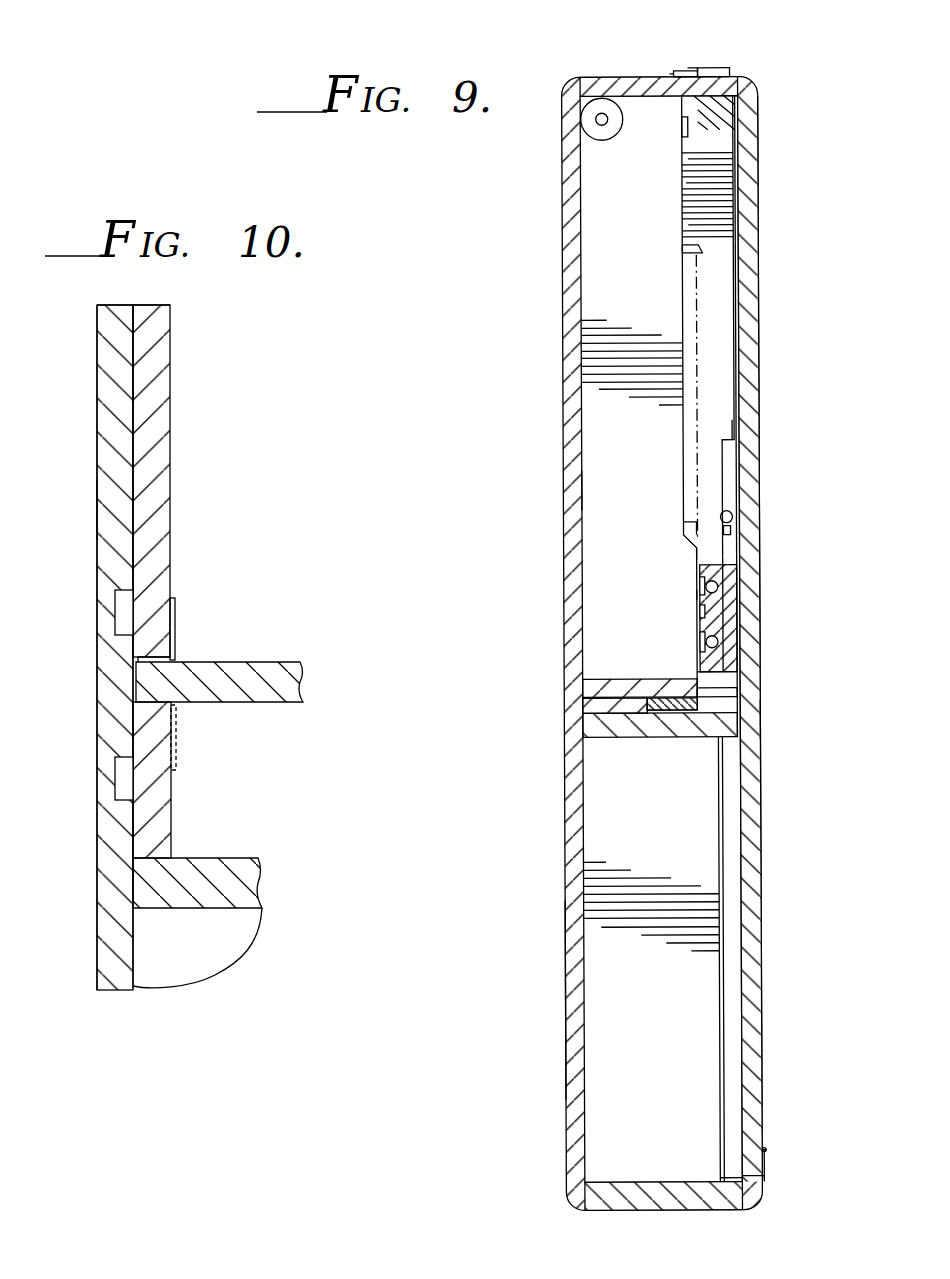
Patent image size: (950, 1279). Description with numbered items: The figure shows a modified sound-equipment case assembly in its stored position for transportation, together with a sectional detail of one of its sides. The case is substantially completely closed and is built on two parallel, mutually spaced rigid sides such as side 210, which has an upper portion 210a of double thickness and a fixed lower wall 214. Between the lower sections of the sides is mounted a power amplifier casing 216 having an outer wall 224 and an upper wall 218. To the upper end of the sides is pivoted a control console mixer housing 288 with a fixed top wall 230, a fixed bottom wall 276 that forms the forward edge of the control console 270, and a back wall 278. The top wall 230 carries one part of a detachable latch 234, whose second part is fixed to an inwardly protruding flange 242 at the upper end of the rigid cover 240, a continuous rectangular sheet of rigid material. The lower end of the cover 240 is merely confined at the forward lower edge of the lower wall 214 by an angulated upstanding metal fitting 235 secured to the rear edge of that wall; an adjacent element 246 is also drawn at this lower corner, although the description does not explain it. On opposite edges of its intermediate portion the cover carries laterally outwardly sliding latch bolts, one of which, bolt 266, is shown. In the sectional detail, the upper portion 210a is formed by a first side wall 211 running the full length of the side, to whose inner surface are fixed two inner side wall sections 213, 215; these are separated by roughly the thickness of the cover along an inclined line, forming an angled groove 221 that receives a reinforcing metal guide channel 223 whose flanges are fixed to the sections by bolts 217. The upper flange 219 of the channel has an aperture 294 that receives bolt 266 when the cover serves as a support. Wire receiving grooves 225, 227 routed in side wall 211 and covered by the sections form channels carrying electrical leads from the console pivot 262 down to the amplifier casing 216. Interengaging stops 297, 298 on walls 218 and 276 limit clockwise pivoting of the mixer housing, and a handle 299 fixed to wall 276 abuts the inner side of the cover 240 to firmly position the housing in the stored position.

In FIG. 10, the side 210 is at (186, 374).
In FIG. 9, the upper portion 210a is at (748, 285).
In FIG. 10, the first side wall 211 is at (107, 510).
In FIG. 9, the side section 213 is at (726, 426).
In FIG. 10, the side section 213 is at (170, 508).
In FIG. 9, the lower wall 214 is at (648, 1208).
In FIG. 9, the side section 215 is at (730, 672).
In FIG. 10, the side section 215 is at (166, 802).
In FIG. 9, the power amplifier casing 216 is at (602, 1060).
In FIG. 9, the bolt 217 is at (718, 585).
In FIG. 9, the upper wall 218 is at (628, 736).
In FIG. 10, the upper wall 218 is at (243, 857).
In FIG. 9, the upper flange 219 is at (694, 565).
In FIG. 10, the upper flange 219 is at (178, 604).
In FIG. 10, the angled groove 221 is at (180, 614).
In FIG. 9, the reinforcing metal guide channel 223 is at (738, 600).
In FIG. 10, the reinforcing metal guide channel 223 is at (186, 643).
In FIG. 9, the outer wall 224 is at (575, 985).
In FIG. 10, the wire receiving groove 225 is at (125, 775).
In FIG. 10, the wire receiving groove 227 is at (125, 613).
In FIG. 9, the top wall 230 is at (620, 47).
In FIG. 9, the detachable latch 234 is at (732, 46).
In FIG. 9, the angulated upstanding metal fitting 235 is at (774, 1150).
In FIG. 9, the rigid cover 240 is at (772, 718).
In FIG. 10, the rigid cover 240 is at (274, 658).
In FIG. 9, the inwardly protruding flange 242 is at (697, 98).
In FIG. 9, the connector 246 is at (788, 1177).
In FIG. 9, the console pivot 262 is at (603, 120).
In FIG. 9, the latch bolt 266 is at (735, 517).
In FIG. 9, the control console 270 is at (712, 247).
In FIG. 9, the bottom wall 276 is at (600, 688).
In FIG. 9, the back wall 278 is at (572, 490).
In FIG. 9, the control console mixer housing 288 is at (596, 433).
In FIG. 9, the aperture 294 is at (697, 595).
In FIG. 9, the stop 297 is at (597, 716).
In FIG. 9, the stop 298 is at (672, 696).
In FIG. 9, the handle 299 is at (732, 690).